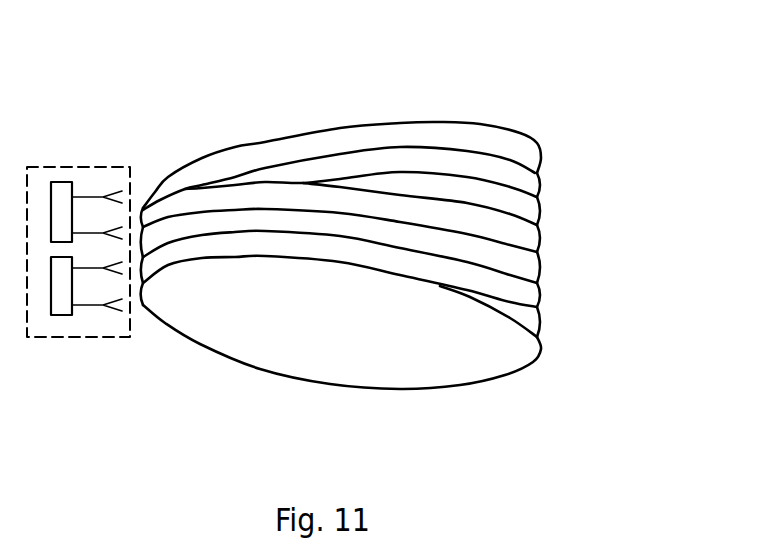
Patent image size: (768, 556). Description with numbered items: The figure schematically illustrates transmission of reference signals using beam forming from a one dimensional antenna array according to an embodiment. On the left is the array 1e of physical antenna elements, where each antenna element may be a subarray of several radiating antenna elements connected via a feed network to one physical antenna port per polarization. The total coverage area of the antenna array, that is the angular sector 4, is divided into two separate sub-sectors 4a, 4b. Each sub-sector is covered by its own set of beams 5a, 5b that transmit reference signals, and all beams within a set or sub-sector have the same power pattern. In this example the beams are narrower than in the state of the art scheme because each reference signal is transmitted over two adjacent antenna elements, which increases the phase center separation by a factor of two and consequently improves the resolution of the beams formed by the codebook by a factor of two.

The array of physical antenna elements 1e is at (88, 167).
The angular sector 4 is at (658, 127).
The sub-sector 4a is at (552, 133).
The sub-sector 4b is at (552, 263).
The set of beams 5a is at (415, 121).
The set of beams 5b is at (480, 366).